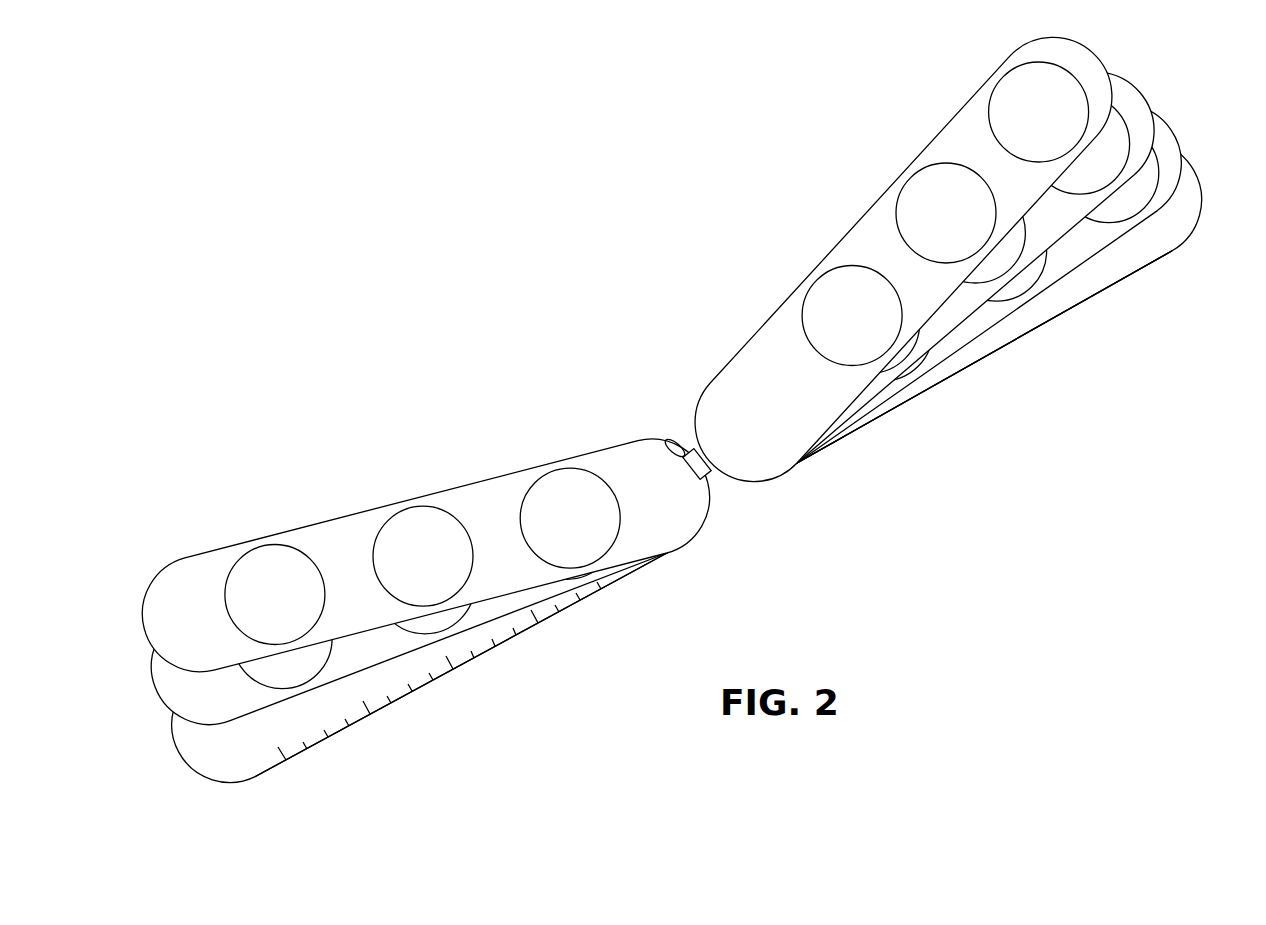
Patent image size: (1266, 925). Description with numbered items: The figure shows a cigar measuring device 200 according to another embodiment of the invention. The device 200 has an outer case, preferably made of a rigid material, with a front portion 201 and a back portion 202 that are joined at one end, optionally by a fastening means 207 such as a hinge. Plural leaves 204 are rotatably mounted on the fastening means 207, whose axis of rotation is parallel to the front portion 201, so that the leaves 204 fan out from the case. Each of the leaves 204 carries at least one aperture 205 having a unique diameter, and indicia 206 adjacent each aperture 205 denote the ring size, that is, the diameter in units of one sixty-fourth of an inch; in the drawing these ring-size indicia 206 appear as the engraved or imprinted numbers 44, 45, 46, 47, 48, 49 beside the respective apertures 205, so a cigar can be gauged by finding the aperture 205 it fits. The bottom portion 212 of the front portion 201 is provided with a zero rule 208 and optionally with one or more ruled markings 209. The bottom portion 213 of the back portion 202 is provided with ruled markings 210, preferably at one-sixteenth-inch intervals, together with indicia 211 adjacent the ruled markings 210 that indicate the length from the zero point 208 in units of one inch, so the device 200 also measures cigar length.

The cigar measuring device 200 is at (697, 434).
The front portion 201 is at (973, 360).
The back portion 202 is at (434, 638).
The leaves 204 is at (977, 278).
The aperture 205 is at (903, 259).
The indicia 206 is at (425, 555).
The fastening means 207 is at (667, 434).
The zero rule 208 is at (980, 312).
The ruled markings 209 is at (827, 450).
The ruled markings 210 is at (598, 588).
The indicia 211 is at (360, 693).
The bottom portion 212 is at (1078, 308).
The bottom portion 213 is at (537, 635).
The lens 44 is at (843, 325).
The lens 45 is at (939, 223).
The lens 46 is at (1031, 121).
The lens 47 is at (585, 518).
The lens 48 is at (438, 556).
The lens 49 is at (290, 595).